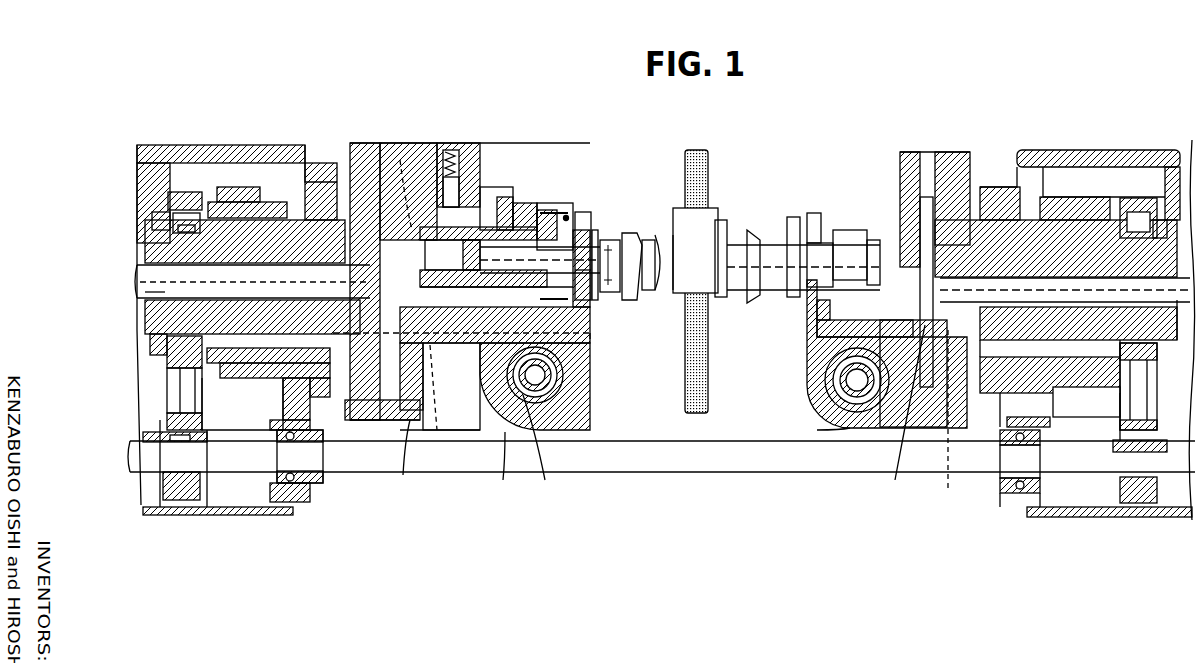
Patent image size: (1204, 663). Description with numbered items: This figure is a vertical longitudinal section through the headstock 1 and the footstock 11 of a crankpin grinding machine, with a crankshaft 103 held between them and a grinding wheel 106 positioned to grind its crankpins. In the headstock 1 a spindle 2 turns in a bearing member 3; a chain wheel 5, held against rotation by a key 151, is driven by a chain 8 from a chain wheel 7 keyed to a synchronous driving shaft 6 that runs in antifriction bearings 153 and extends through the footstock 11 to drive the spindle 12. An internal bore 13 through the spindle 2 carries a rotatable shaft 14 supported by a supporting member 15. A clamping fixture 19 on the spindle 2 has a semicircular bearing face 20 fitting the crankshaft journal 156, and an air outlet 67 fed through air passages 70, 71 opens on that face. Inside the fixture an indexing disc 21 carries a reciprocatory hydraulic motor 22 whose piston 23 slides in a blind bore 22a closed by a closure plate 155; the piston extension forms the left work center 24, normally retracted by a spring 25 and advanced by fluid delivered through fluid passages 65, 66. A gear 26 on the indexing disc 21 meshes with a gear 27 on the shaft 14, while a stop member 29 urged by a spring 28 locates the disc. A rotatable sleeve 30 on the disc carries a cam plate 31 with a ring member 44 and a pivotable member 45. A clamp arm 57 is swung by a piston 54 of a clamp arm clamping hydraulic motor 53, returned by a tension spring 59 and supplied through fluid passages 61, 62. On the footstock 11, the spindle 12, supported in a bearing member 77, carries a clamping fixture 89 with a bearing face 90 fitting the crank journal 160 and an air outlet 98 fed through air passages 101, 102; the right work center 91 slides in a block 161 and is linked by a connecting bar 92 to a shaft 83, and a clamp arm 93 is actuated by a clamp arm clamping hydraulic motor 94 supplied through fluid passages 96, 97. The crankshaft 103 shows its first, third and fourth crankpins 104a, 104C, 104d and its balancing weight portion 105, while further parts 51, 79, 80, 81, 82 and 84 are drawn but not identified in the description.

The headstock 1 is at (285, 162).
The spindle 2 is at (322, 190).
The bearing member 3 is at (255, 200).
The chain wheel 5 is at (195, 215).
The synchronous driving shaft 6 is at (380, 474).
The chain wheel 7 is at (200, 476).
The chain 8 is at (183, 195).
The footstock 11 is at (1068, 150).
The spindle 12 is at (1075, 365).
The internal bore 13 is at (145, 268).
The rotatable shaft 14 is at (145, 296).
The supporting member 15 is at (363, 240).
The clamping fixture 19 is at (476, 433).
The semicircular bearing face 20 is at (625, 265).
The indexing disc 21 is at (445, 190).
The reciprocatory hydraulic motor 22 is at (435, 380).
The concentric blind cylindrical bore 22a is at (415, 200).
The piston 23 is at (514, 471).
The left work center 24 is at (552, 241).
The spring 25 is at (495, 228).
The gear 26 is at (395, 240).
The gear 27 is at (365, 395).
The spring 28 is at (458, 162).
The stop member 29 is at (490, 195).
The rotatable sleeve 30 is at (425, 360).
The cam plate 31 is at (525, 205).
The ring member 44 is at (543, 449).
The pivotable member 45 is at (550, 212).
The bottom plate 51 is at (545, 290).
The clamp arm clamping hydraulic motor 53 is at (555, 375).
The piston 54 is at (585, 388).
The clamp arm 57 is at (585, 215).
The tension spring 59 is at (563, 355).
The fluid passage 61 is at (278, 204).
The fluid passage 62 is at (435, 393).
The fluid passage 65 is at (253, 378).
The fluid passage 66 is at (463, 255).
The air outlet 67 is at (592, 318).
The air passage 70 is at (155, 312).
The air passage 71 is at (413, 462).
The bearing member 77 is at (1005, 215).
The bearing ring 79 is at (1158, 212).
The key 80 is at (1155, 445).
The bearing housing 81 is at (1157, 390).
The bearing 82 is at (1010, 390).
The shaft 83 is at (1062, 200).
The tailstock body 84 is at (975, 240).
The clamping fixture 89 is at (827, 427).
The bearing face 90 is at (828, 245).
The right work center 91 is at (850, 233).
The connecting bar 92 is at (903, 417).
The clamp arm 93 is at (813, 215).
The clamp arm clamping hydraulic motor 94 is at (825, 385).
The fluid passage 96 is at (1082, 278).
The fluid passage 97 is at (948, 419).
The air outlet 98 is at (810, 300).
The air passage 101 is at (1105, 357).
The air passage 102 is at (865, 322).
The crankshaft 103 is at (722, 222).
The third crankpin 104C is at (698, 220).
The first crankpin 104a is at (630, 296).
The fourth crankpin 104d is at (755, 298).
The balancing weight portion 105 is at (612, 240).
The grinding wheel 106 is at (705, 360).
The key 151 is at (160, 215).
The antifriction bearings 153 is at (295, 502).
The closure plate 155 is at (580, 200).
The crankshaft journal 156 is at (598, 235).
The crank journal 160 is at (790, 240).
The block 161 is at (923, 240).